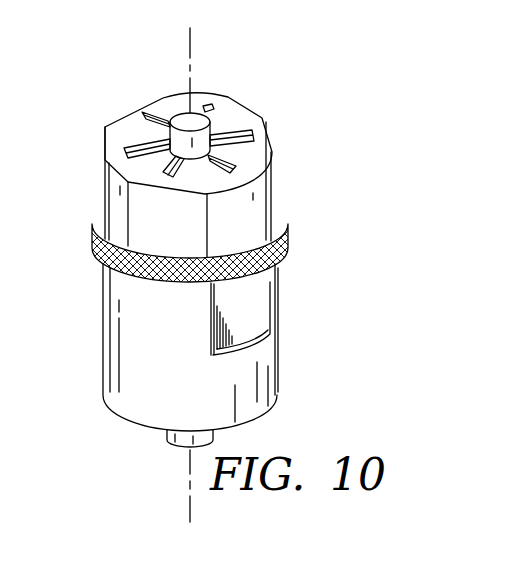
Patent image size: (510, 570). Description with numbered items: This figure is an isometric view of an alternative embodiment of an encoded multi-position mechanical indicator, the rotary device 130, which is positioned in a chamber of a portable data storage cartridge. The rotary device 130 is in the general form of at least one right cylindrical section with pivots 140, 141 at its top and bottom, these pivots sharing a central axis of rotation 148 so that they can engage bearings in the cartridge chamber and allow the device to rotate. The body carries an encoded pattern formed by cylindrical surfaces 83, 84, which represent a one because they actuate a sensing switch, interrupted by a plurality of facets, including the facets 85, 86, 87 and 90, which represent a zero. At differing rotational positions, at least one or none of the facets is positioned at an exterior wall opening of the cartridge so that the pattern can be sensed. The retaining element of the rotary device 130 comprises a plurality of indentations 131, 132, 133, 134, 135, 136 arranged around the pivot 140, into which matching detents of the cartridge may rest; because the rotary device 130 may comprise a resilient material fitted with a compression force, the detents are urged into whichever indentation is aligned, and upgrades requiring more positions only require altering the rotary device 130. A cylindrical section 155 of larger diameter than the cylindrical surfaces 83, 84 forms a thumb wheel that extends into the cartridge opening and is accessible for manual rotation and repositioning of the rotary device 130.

The rotary device 130 is at (312, 338).
The central axis of rotation 148 is at (188, 31).
The facet 90 is at (122, 118).
The facet 87 is at (267, 131).
The facet 85 is at (138, 208).
The cylindrical surface 83 is at (260, 203).
The pivot 140 is at (226, 174).
The indentation 132 is at (212, 104).
The indentation 131 is at (152, 112).
The indentation 136 is at (105, 148).
The indentation 133 is at (252, 124).
The indentation 134 is at (238, 161).
The indentation 135 is at (187, 172).
The cylindrical section 155 is at (290, 243).
The cylindrical surface 84 is at (140, 410).
The facet 86 is at (258, 297).
The pivot 141 is at (175, 446).